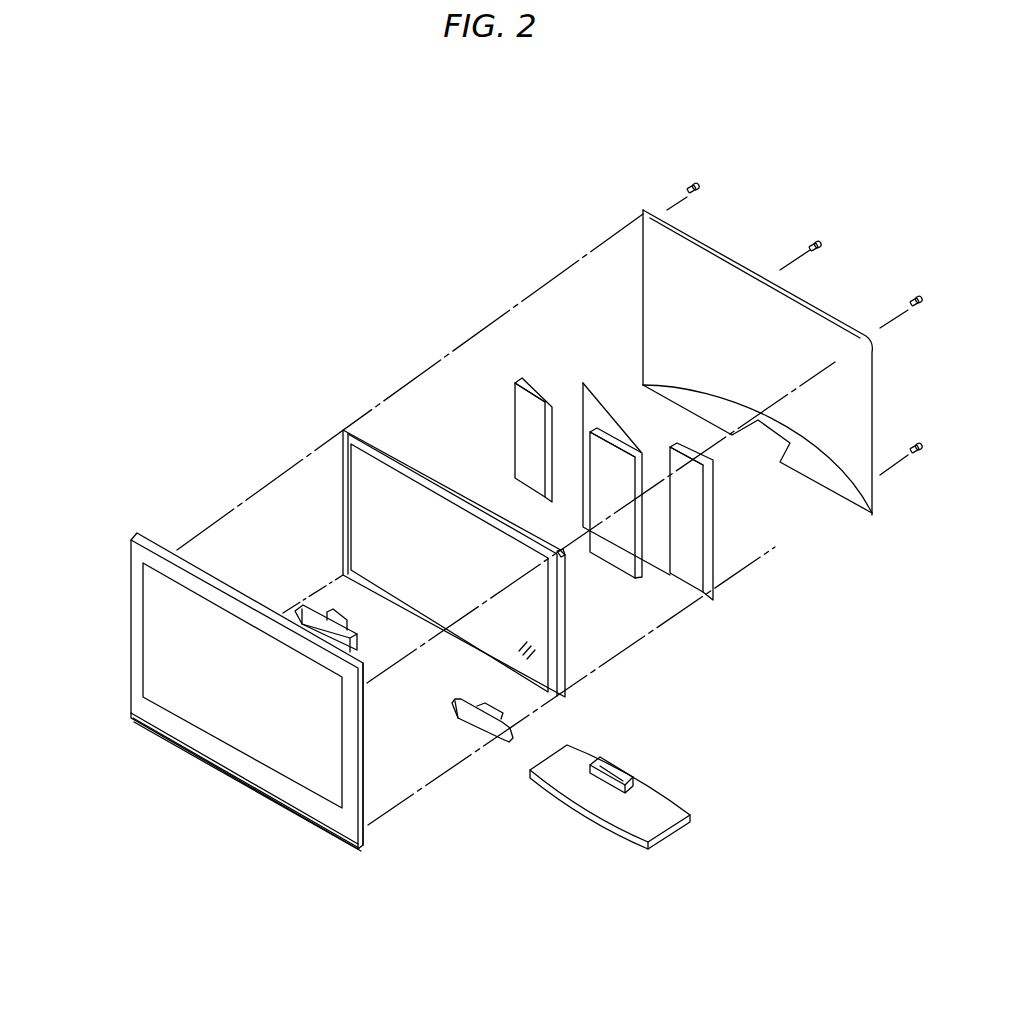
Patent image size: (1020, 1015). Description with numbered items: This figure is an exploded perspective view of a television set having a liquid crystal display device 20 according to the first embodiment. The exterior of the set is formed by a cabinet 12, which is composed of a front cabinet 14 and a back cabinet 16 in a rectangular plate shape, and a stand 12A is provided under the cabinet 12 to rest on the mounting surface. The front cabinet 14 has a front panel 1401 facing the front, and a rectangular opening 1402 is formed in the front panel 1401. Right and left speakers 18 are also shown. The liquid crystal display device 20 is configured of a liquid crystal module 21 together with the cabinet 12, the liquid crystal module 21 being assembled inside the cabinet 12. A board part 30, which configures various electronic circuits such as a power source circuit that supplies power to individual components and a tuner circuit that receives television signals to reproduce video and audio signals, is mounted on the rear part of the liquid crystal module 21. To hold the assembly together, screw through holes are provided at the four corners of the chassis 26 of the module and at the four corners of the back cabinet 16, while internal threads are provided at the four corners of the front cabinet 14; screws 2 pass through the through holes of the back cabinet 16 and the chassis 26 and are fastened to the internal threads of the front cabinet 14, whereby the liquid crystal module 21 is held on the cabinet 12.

The screws 2 is at (697, 180).
The cabinet 12 is at (260, 697).
The stand 12A is at (660, 803).
The front cabinet 14 is at (132, 549).
The back cabinet 16 is at (833, 298).
The speakers 18 is at (308, 603).
The liquid crystal display device 20 is at (234, 267).
The liquid crystal module 21 is at (334, 407).
The chassis 26 is at (568, 652).
The board part 30 is at (714, 560).
The front panel 1401 is at (348, 777).
The rectangular opening 1402 is at (345, 734).